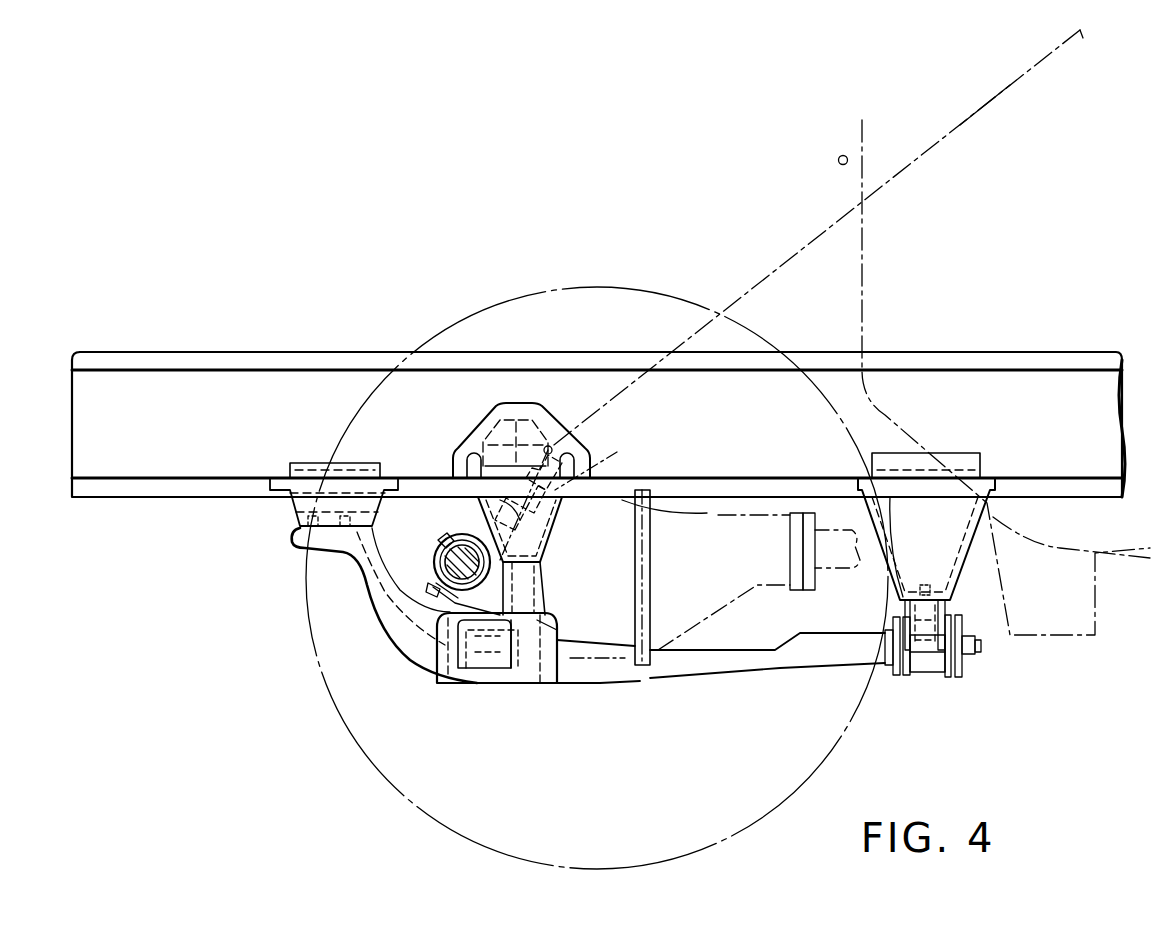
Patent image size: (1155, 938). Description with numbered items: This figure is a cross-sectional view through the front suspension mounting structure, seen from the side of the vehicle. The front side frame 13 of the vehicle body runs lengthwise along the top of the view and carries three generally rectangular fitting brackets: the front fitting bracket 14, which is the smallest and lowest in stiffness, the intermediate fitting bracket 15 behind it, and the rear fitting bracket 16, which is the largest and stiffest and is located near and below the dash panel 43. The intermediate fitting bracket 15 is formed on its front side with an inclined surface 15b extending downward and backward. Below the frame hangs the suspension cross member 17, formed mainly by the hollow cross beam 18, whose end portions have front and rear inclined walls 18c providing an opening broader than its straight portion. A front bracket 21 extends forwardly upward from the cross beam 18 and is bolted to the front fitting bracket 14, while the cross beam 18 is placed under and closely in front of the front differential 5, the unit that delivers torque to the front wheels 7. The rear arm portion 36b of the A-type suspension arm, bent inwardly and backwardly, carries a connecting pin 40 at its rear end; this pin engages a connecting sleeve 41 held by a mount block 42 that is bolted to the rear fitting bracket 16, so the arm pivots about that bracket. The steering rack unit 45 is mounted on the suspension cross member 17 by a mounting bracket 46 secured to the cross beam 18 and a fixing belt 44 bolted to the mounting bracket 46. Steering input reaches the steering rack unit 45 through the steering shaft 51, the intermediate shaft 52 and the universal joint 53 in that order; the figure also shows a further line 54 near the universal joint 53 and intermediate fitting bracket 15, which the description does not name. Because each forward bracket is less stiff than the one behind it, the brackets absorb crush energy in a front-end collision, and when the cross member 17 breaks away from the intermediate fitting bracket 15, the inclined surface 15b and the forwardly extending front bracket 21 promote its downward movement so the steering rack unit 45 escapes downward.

The front differential 5 is at (708, 516).
The front wheel 7 is at (598, 287).
The front side frame 13 is at (257, 378).
The front fitting bracket 14 is at (297, 471).
The intermediate fitting bracket 15 is at (538, 546).
The inclined surface 15b is at (482, 505).
The rear fitting bracket 16 is at (965, 476).
The suspension cross member 17 is at (535, 720).
The cross beam 18 is at (545, 655).
The inclined wall 18c is at (503, 662).
The front bracket 21 is at (430, 652).
The rear arm portion 36b is at (740, 670).
The connecting pin 40 is at (978, 650).
The connecting sleeve 41 is at (940, 690).
The mount block 42 is at (925, 630).
The dash panel 43 is at (862, 288).
The fixing belt 44 is at (430, 556).
The steering rack unit 45 is at (438, 536).
The mounting bracket 46 is at (455, 630).
The steering shaft 51 is at (940, 98).
The intermediate shaft 52 is at (758, 233).
The universal joint 53 is at (550, 445).
The axis line 54 is at (618, 452).